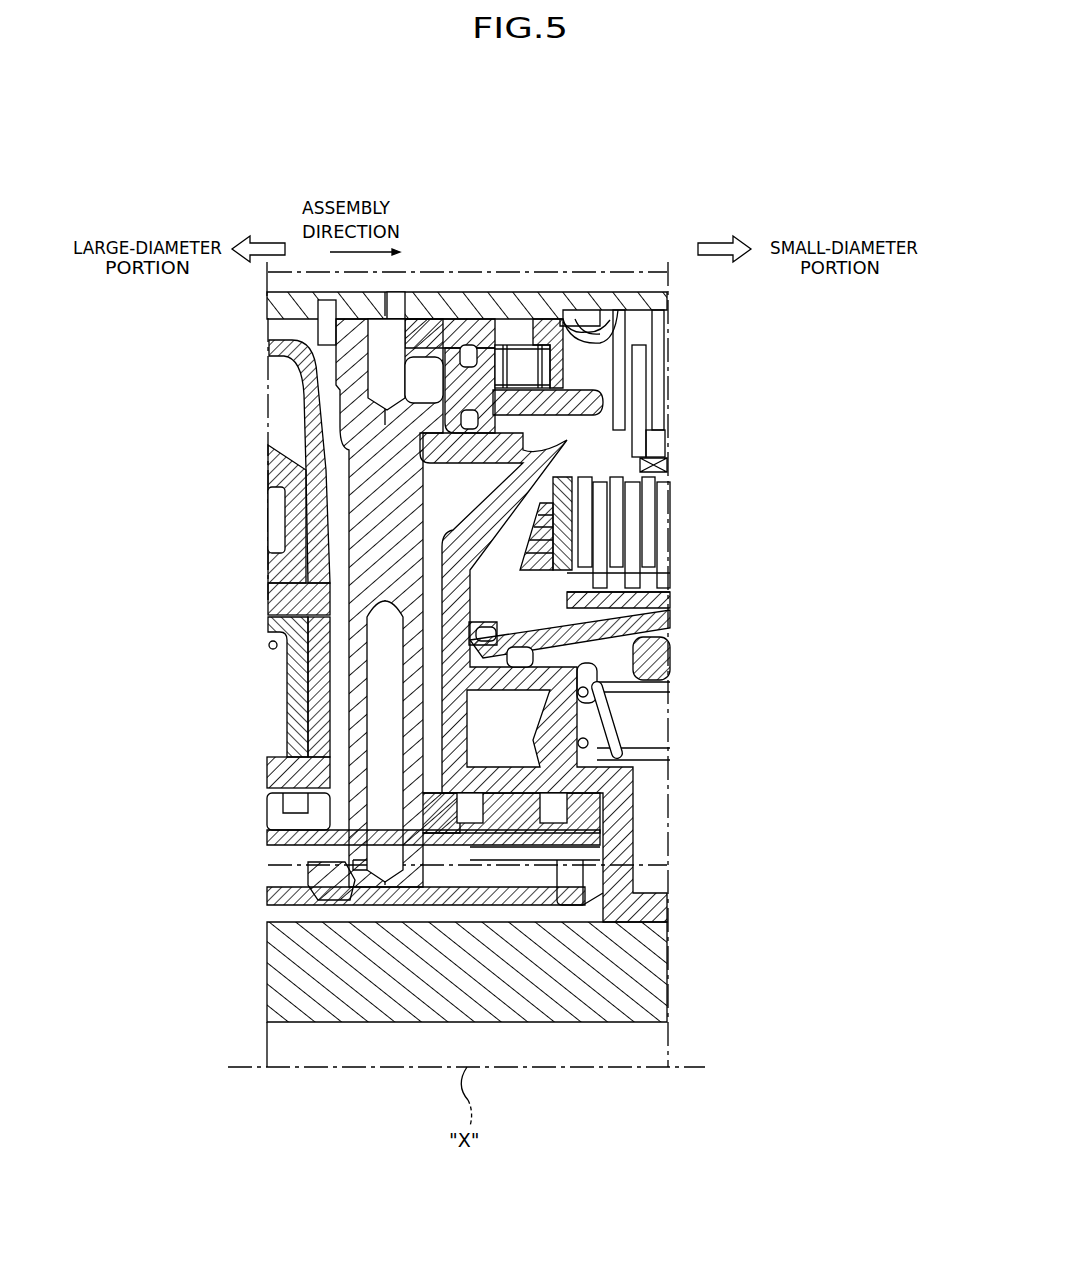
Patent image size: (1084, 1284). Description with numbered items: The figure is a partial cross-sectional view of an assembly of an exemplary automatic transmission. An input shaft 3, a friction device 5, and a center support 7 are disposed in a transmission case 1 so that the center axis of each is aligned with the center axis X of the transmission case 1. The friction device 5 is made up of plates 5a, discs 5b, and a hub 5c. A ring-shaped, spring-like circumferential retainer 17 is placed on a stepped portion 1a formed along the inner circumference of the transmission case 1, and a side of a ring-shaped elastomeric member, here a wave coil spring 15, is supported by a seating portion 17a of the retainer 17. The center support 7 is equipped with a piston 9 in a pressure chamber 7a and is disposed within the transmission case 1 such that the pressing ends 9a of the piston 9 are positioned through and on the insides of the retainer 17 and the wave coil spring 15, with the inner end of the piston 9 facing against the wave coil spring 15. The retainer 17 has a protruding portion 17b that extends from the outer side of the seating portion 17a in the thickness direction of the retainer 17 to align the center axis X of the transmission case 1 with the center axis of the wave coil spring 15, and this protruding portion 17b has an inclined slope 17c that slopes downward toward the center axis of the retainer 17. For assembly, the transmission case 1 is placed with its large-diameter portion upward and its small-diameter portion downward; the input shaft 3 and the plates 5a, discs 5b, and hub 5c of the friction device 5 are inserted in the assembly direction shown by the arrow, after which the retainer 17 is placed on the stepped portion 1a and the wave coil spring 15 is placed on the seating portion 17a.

The transmission case 1 is at (410, 292).
The stepped portion 1a is at (565, 322).
The input shaft 3 is at (638, 962).
The friction device 5 is at (670, 459).
The plates 5a is at (658, 358).
The discs 5b is at (640, 380).
The hub 5c is at (695, 432).
The center support 7 is at (372, 440).
The pressure chamber 7a is at (415, 372).
The piston 9 is at (465, 383).
The pressing ends 9a is at (657, 472).
The wave coil spring 15 is at (520, 367).
The retainer 17 is at (700, 180).
The seating portion 17a is at (600, 345).
The protruding portion 17b is at (578, 332).
The inclined slope 17c is at (592, 338).